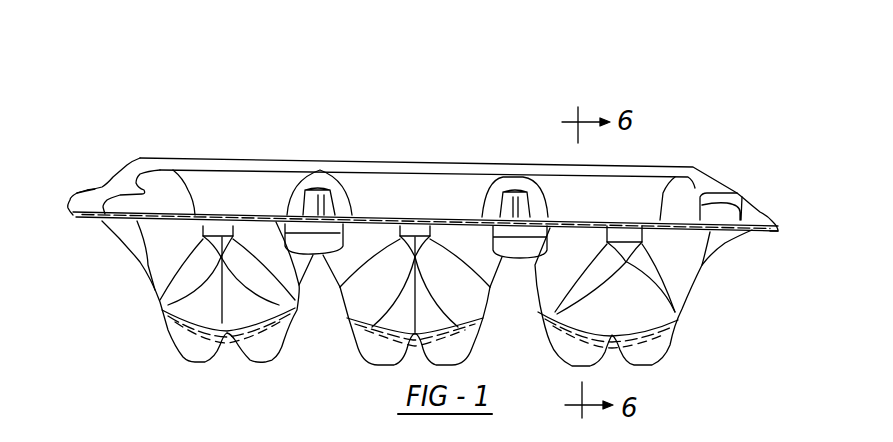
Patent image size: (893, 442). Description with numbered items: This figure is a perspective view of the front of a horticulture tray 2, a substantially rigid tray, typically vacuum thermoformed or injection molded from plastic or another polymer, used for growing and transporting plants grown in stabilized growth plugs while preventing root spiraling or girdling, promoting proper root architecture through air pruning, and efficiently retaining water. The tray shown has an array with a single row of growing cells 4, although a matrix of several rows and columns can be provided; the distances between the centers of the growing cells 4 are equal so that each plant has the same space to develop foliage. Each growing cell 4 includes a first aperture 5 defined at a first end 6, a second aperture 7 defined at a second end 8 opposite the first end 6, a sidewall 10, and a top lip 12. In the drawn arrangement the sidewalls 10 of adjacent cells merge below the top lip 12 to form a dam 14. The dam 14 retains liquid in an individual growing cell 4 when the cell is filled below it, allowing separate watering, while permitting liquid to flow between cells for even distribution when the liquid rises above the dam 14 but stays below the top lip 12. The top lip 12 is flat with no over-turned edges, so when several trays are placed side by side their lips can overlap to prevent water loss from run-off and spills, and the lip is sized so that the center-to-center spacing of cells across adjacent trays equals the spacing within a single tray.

The horticulture tray 2 is at (129, 123).
The growing cell 4 is at (248, 185).
The first aperture 5 is at (205, 185).
The first end 6 is at (110, 183).
The second aperture 7 is at (200, 360).
The second end 8 is at (230, 362).
The sidewall 10 is at (190, 287).
The top lip 12 is at (77, 222).
The dam 14 is at (338, 242).